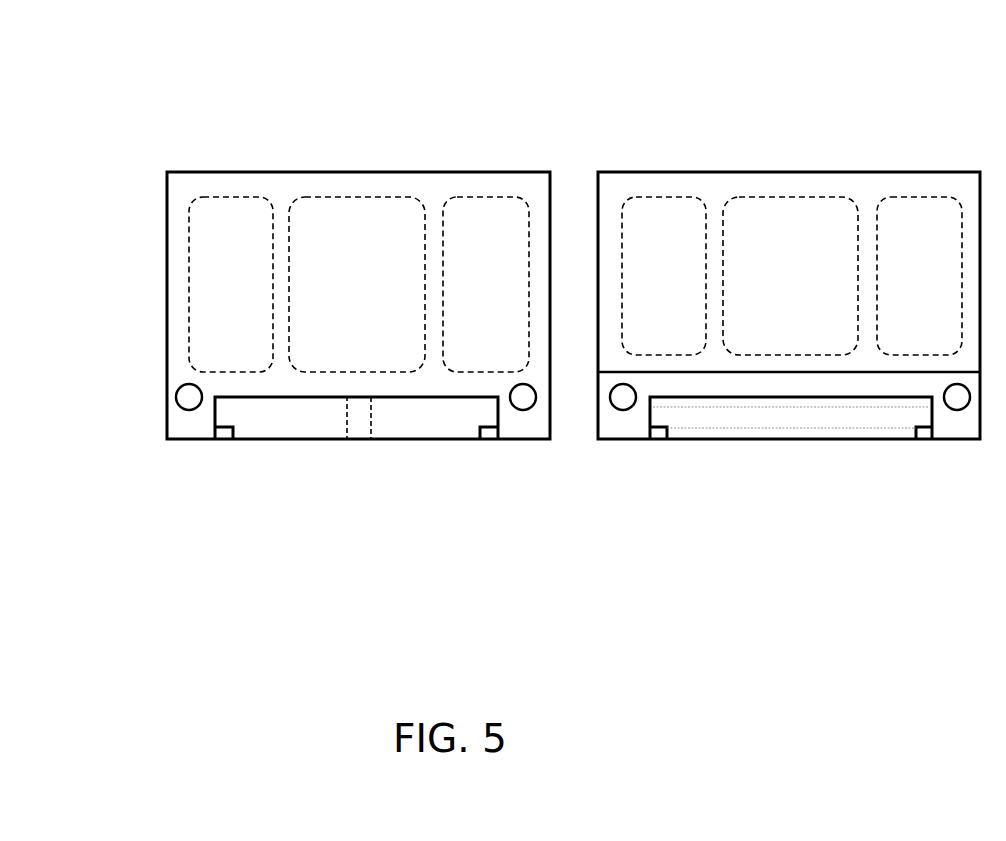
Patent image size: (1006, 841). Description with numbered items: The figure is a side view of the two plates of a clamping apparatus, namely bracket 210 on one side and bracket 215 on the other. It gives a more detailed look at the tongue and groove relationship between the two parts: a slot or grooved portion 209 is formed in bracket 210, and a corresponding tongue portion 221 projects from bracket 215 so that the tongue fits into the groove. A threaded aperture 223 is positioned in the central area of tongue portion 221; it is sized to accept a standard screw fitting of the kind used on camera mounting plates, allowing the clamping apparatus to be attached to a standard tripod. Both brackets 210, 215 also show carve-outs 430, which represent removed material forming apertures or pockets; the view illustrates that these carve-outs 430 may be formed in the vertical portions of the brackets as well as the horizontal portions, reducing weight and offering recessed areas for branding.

The bracket 215 is at (260, 172).
The bracket 210 is at (905, 172).
The tongue portion 221 is at (412, 440).
The threaded aperture 223 is at (358, 445).
The slot or grooved portion 209 is at (795, 440).
The carve-outs 430 is at (575, 284).